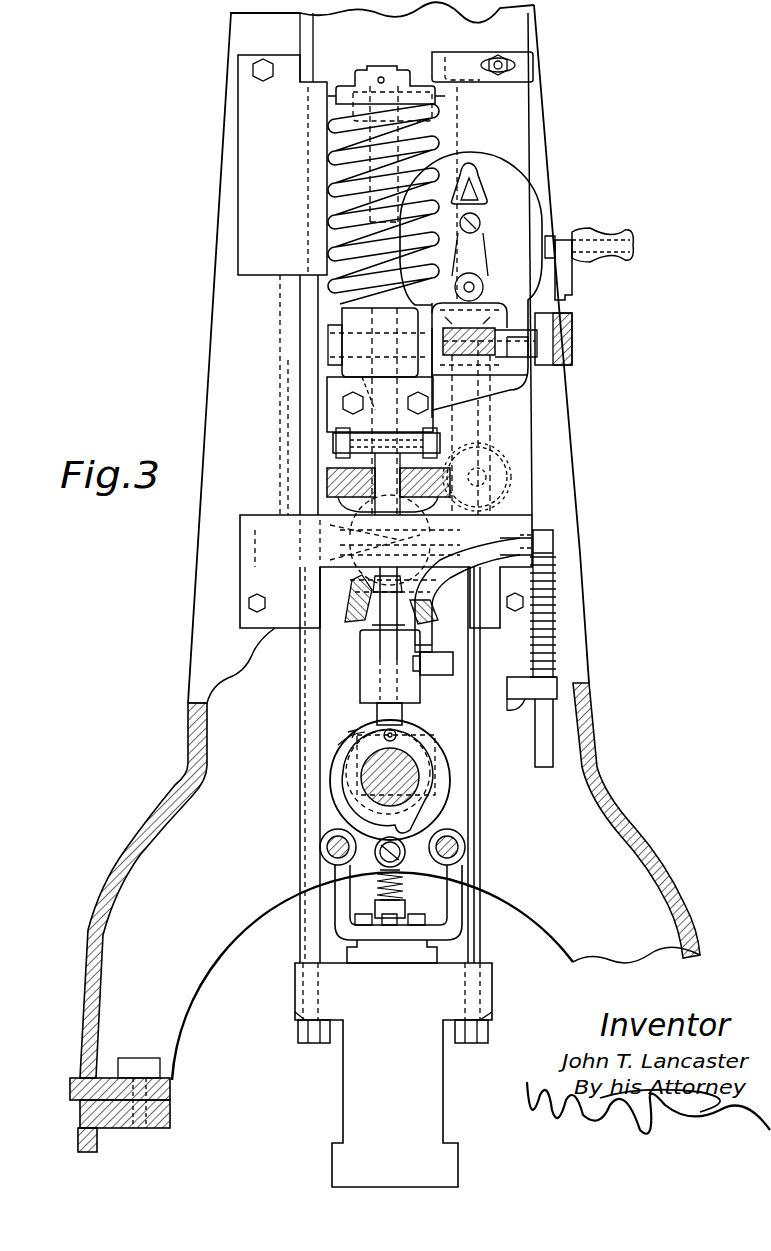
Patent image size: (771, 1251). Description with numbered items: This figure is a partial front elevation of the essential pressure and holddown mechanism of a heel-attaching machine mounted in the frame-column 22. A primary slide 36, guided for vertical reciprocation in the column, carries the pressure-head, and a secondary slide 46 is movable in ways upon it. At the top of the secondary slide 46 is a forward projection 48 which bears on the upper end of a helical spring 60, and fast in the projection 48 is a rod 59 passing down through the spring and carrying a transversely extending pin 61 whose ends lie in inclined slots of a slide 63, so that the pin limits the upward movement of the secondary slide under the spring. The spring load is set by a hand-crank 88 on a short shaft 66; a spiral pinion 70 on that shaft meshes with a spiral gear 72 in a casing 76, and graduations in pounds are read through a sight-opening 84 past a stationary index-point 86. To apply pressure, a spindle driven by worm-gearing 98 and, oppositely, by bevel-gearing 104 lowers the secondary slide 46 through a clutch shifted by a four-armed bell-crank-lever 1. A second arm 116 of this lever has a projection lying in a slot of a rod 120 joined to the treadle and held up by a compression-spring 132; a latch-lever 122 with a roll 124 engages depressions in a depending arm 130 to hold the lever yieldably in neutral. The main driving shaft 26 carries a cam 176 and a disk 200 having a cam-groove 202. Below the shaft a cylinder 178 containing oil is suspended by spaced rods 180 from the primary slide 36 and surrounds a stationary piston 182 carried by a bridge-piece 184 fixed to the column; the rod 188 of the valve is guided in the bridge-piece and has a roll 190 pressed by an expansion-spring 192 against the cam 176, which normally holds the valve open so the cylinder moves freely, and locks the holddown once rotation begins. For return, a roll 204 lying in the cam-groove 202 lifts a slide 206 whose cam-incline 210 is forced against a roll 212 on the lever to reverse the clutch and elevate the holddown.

The frame-column 22 is at (190, 580).
The main driving shaft 26 is at (352, 784).
The primary slide 36 is at (327, 410).
The secondary slide 46 is at (315, 97).
The forward projection 48 is at (415, 93).
The rod 59 is at (372, 170).
The helical spring 60 is at (340, 160).
The transversely extending pin 61 is at (333, 445).
The slide 63 is at (372, 480).
The short shaft 66 is at (380, 404).
The spiral pinion 70 is at (492, 350).
The spiral gear 72 is at (572, 343).
The casing 76 is at (543, 212).
The sight-opening 84 is at (475, 170).
The stationary index-point 86 is at (466, 178).
The hand-crank 88 is at (575, 265).
The worm-gearing 98 is at (470, 466).
The bevel-gearing 104 is at (300, 537).
The four-armed bell-crank-lever 1 is at (445, 570).
The second arm 116 is at (553, 572).
The rod 120 is at (553, 732).
The latch-lever 122 is at (430, 676).
The roll 124 is at (455, 662).
The depending arm 130 is at (450, 612).
The compression-spring 132 is at (553, 617).
The cam 176 is at (445, 800).
The cylinder 178 is at (343, 1093).
The spaced rods 180 is at (300, 700).
The stationary piston 182 is at (437, 950).
The bridge-piece 184 is at (337, 932).
The valve rod 188 is at (394, 900).
The roll 190 is at (340, 871).
The expansion-spring 192 is at (377, 887).
The disk 200 is at (433, 723).
The cam-groove 202 is at (338, 748).
The roll 204 is at (357, 770).
The slide 206 is at (378, 718).
The cam-incline 210 is at (382, 648).
The roll 212 is at (387, 637).